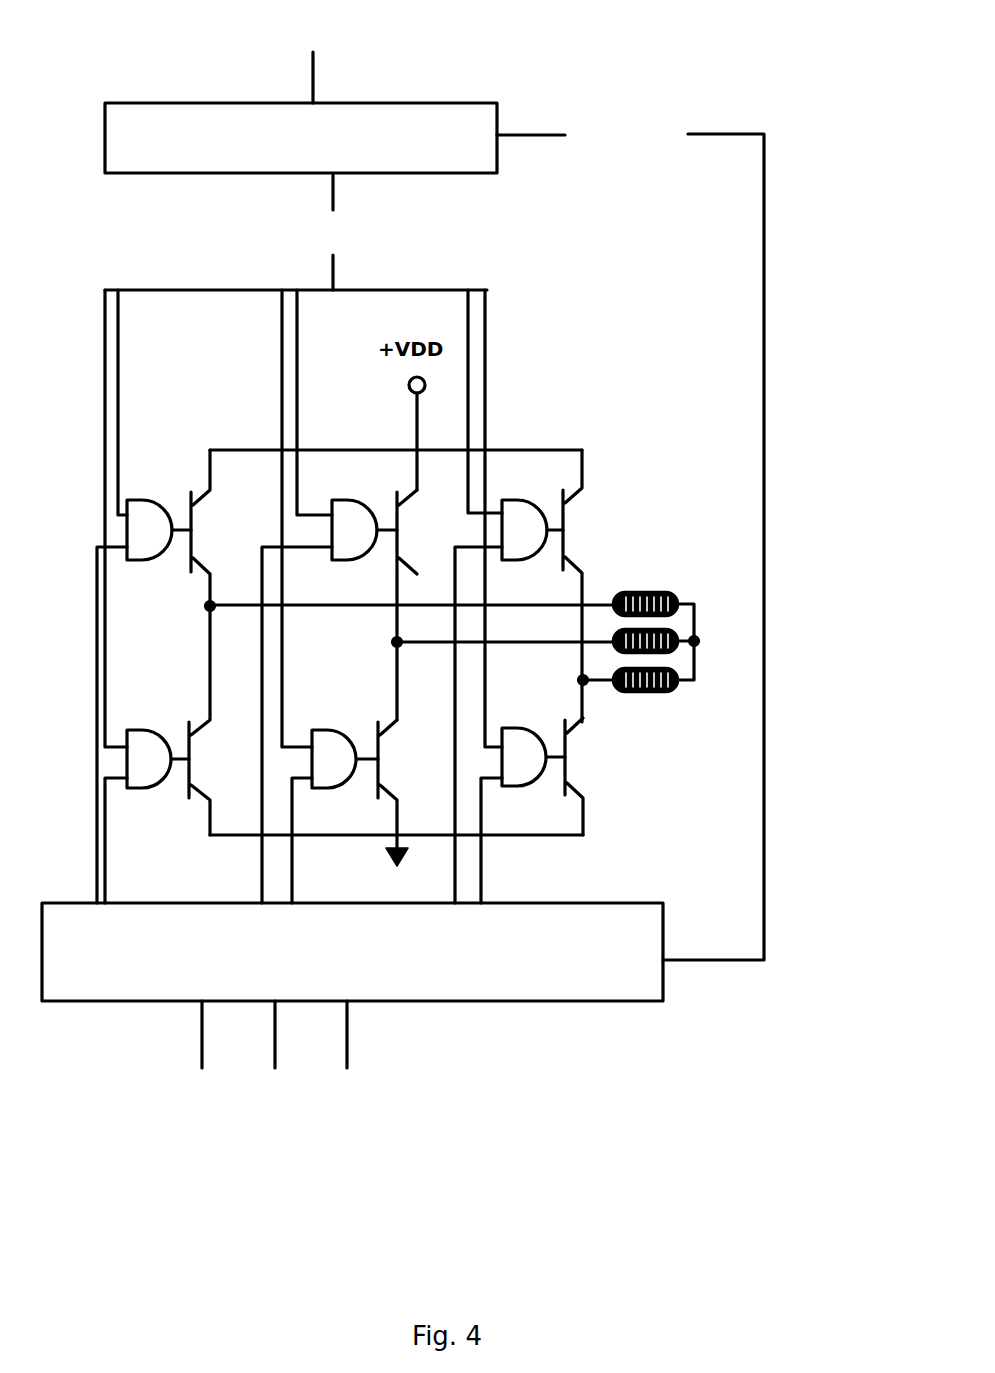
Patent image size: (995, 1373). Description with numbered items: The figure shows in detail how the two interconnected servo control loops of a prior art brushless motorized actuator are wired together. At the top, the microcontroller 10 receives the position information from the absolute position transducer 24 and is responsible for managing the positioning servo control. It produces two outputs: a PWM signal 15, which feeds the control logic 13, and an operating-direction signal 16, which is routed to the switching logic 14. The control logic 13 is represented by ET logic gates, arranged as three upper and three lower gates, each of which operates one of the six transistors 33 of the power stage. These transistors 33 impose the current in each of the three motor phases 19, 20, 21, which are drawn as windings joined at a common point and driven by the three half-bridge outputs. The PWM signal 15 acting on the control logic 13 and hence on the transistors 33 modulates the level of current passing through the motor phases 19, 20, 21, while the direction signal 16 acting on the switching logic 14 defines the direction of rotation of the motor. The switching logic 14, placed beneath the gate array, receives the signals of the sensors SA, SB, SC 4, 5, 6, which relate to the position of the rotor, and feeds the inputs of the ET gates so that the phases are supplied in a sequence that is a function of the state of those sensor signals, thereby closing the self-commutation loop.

The absolute position transducer 24 is at (262, 22).
The microcontroller 10 is at (470, 128).
The operating-direction signal 16 is at (640, 124).
The PWM signal 15 is at (405, 222).
The control logic 13 is at (520, 528).
The motor phase 19 is at (650, 592).
The motor phase 20 is at (660, 630).
The motor phase 21 is at (648, 693).
The power stage transistors 33 is at (575, 760).
The switching logic 14 is at (568, 978).
The sensor SA 4 is at (212, 1106).
The sensor SB 5 is at (280, 1106).
The sensor SC 6 is at (366, 1106).